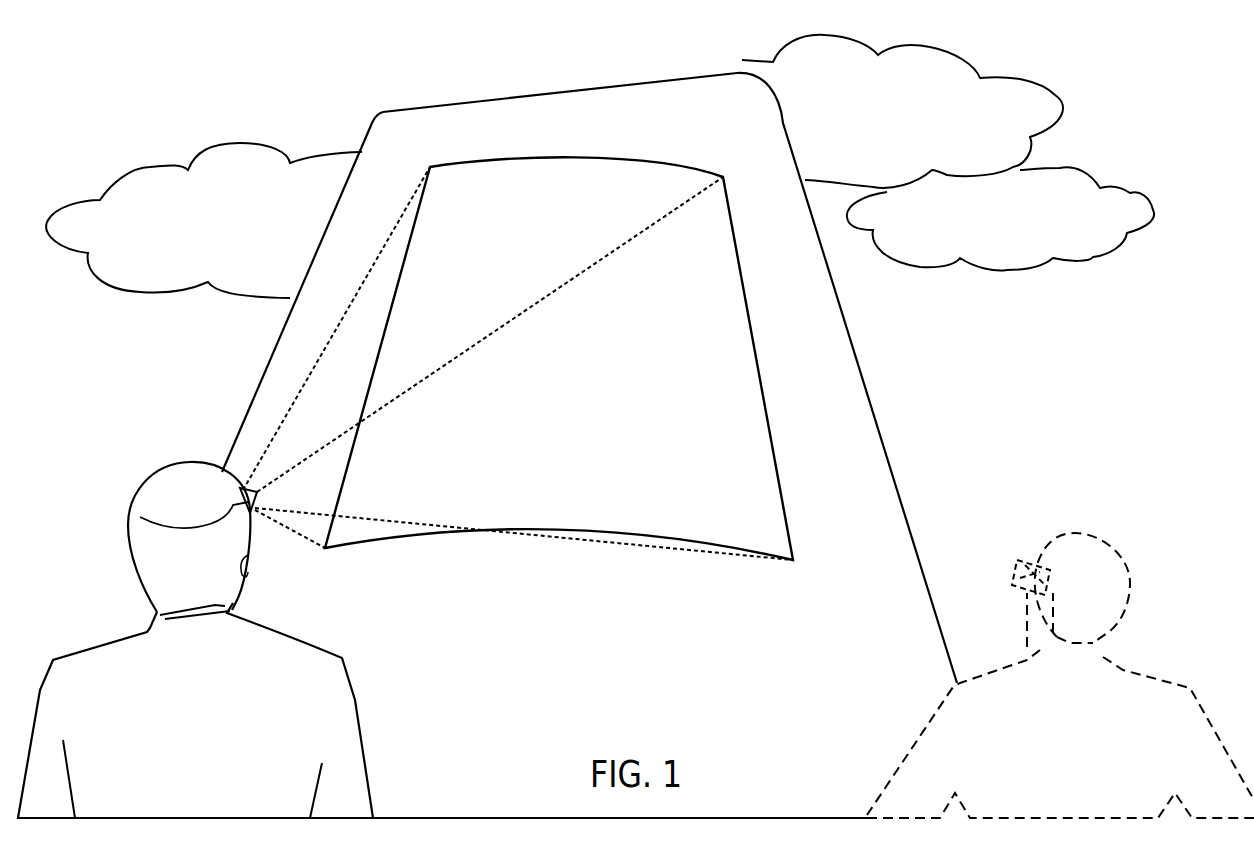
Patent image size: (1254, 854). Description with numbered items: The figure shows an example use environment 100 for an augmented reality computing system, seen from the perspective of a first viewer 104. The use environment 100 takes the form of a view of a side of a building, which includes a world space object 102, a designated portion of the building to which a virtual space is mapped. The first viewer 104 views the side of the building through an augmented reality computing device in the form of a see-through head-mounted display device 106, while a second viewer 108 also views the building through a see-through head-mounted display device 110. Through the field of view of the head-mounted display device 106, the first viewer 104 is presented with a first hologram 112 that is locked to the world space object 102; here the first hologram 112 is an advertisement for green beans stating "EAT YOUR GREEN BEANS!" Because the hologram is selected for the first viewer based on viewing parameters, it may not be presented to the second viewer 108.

The use environment 100 is at (1160, 80).
The world space object 102 is at (753, 320).
The first viewer 104 is at (167, 483).
The see-through head-mounted display device 106 is at (250, 490).
The second viewer 108 is at (1107, 547).
The see-through head-mounted display device 110 is at (1028, 555).
The first hologram 112 is at (505, 246).